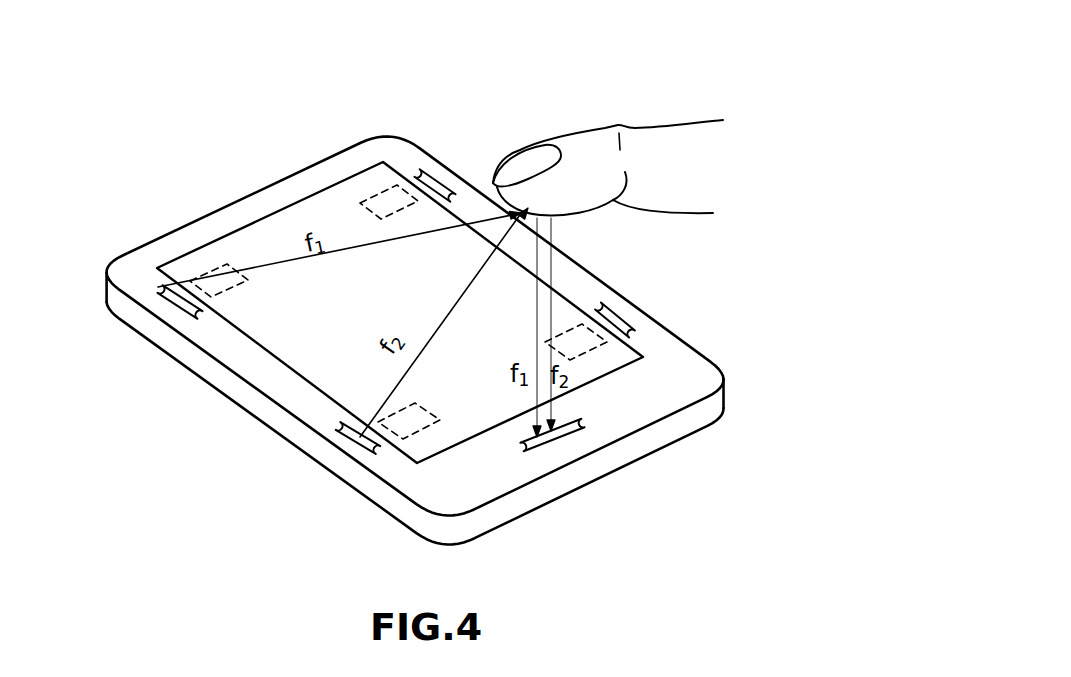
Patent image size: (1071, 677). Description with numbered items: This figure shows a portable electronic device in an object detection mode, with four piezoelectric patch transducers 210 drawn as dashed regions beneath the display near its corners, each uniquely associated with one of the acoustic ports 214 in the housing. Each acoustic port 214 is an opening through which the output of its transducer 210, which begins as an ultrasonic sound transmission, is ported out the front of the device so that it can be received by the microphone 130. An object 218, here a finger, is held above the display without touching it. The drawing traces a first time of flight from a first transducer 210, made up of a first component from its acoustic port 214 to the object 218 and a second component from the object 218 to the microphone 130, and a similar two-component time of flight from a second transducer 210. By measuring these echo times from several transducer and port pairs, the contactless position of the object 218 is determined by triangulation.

The object 218 is at (595, 128).
The piezoelectric patch transducers 210 is at (213, 273).
The acoustic ports 214 is at (157, 287).
The microphone 130 is at (580, 417).